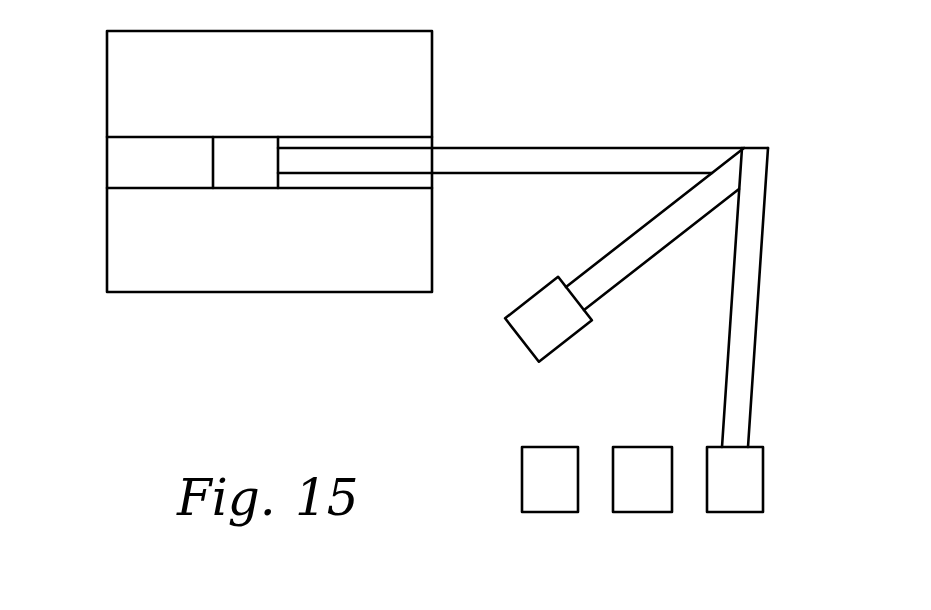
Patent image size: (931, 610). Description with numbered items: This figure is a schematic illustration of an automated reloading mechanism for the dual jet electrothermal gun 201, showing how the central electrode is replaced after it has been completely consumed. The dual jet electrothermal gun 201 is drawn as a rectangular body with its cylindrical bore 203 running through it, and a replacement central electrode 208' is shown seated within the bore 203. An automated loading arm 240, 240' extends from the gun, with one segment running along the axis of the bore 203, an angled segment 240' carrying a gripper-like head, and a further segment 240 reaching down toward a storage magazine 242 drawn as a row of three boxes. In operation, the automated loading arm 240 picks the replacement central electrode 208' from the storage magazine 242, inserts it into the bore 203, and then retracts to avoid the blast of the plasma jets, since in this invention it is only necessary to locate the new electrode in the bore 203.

The dual jet electrothermal gun 201 is at (242, 341).
The cylindrical bore 203 is at (122, 162).
The replacement central electrode 208' is at (266, 133).
The automated loading arm 240' is at (624, 255).
The automated loading arm 240 is at (782, 297).
The storage magazine 242 is at (499, 531).